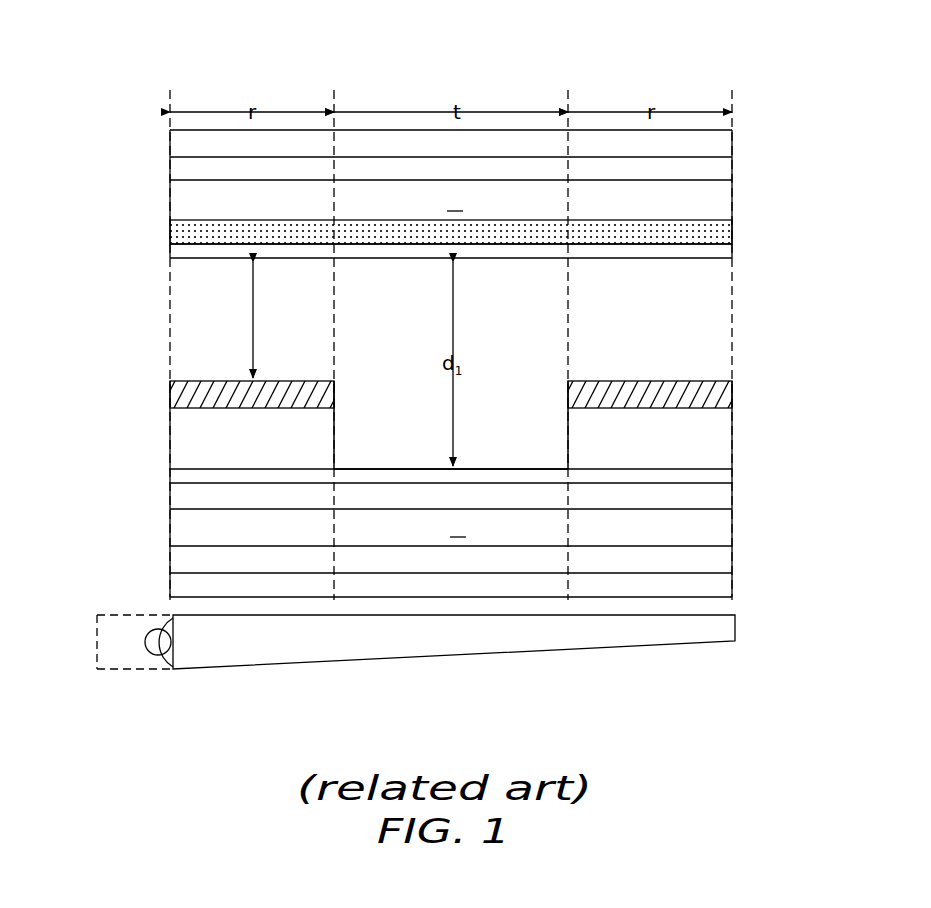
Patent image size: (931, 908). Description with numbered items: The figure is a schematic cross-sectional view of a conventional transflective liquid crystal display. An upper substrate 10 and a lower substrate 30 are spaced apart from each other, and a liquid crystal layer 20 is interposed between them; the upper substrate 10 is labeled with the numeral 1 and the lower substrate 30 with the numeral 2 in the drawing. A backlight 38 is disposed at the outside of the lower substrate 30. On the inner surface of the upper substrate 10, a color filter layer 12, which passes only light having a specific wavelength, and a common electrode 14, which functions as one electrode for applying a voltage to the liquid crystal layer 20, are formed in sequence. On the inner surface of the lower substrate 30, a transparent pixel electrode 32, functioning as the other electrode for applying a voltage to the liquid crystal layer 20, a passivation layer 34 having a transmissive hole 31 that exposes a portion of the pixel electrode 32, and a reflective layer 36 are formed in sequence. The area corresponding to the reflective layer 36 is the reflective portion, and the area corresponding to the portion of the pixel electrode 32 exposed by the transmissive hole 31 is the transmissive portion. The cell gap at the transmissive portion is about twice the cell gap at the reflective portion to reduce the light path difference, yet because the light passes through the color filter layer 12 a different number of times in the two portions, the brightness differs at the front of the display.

The first substrate 1 is at (455, 201).
The second substrate 2 is at (458, 527).
The upper substrate 10 is at (170, 130).
The color filter layer 12 is at (720, 233).
The common electrode 14 is at (720, 253).
The liquid crystal layer 20 is at (170, 258).
The lower substrate 30 is at (170, 381).
The transmissive hole 31 is at (507, 396).
The pixel electrode 32 is at (722, 476).
The passivation layer 34 is at (722, 440).
The reflective layer 36 is at (722, 394).
The backlight 38 is at (97, 615).